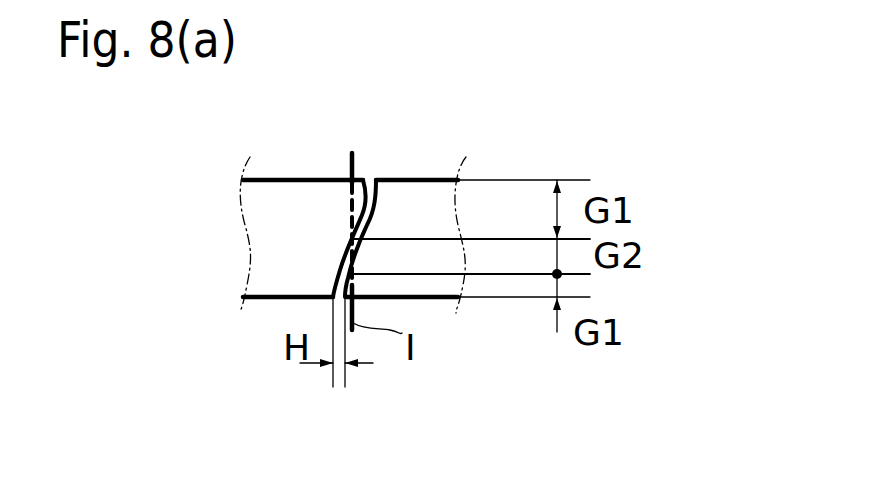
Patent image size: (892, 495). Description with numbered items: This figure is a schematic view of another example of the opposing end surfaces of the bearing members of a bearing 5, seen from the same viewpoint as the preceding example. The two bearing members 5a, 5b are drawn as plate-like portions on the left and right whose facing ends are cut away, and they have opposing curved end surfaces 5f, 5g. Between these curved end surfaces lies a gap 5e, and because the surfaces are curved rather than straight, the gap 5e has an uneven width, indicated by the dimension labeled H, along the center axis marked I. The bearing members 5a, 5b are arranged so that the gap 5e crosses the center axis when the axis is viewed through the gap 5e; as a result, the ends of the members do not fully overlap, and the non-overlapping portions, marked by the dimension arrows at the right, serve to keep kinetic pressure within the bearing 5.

The bearing 5 is at (718, 158).
The bearing member 5a is at (264, 226).
The bearing member 5b is at (432, 296).
The gap 5e is at (367, 196).
The curved end surface 5f is at (342, 266).
The curved end surface 5g is at (376, 188).